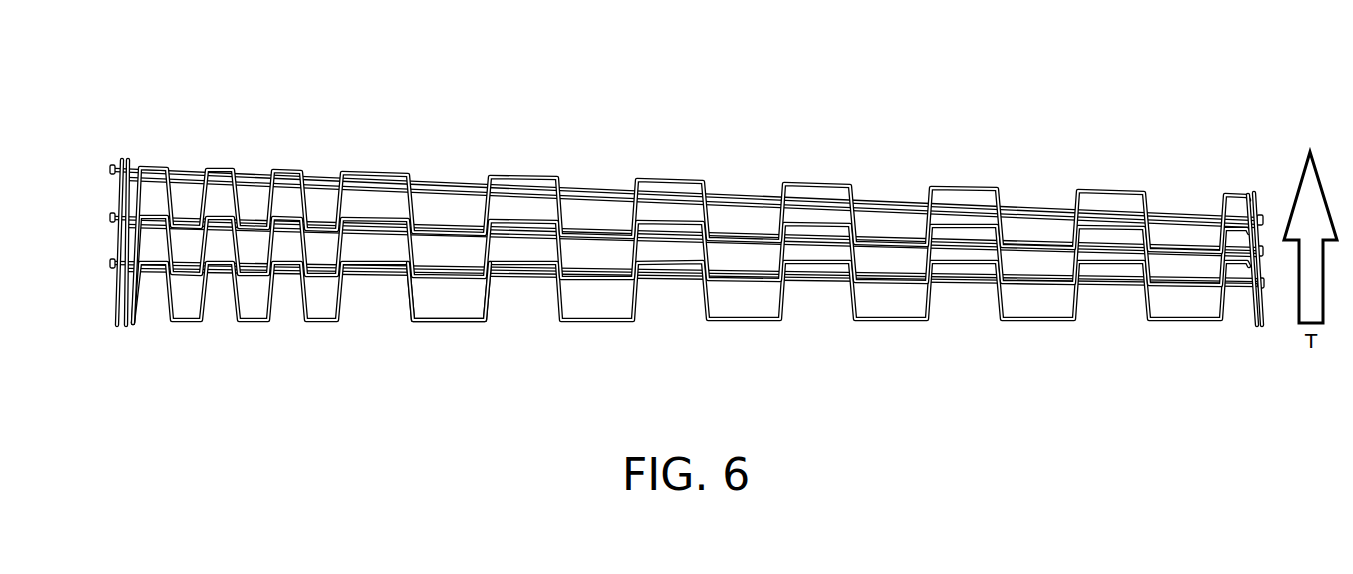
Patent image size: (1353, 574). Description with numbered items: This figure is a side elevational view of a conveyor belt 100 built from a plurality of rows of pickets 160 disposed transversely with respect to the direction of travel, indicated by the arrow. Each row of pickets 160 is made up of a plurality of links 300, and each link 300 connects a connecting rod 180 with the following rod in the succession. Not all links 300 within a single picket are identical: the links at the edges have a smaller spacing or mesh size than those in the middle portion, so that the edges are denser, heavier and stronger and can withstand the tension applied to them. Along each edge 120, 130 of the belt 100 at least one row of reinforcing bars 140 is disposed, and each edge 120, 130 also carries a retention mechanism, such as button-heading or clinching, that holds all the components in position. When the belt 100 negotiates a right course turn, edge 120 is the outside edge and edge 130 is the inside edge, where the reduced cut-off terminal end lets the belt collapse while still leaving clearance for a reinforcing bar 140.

The conveyor belt 100 is at (898, 107).
The outside edge 120 is at (109, 162).
The inside edge 130 is at (1260, 197).
The reinforcing bar 140 is at (133, 160).
The picket 160 is at (764, 322).
The connecting rod 180 is at (525, 276).
The link 300 is at (442, 322).